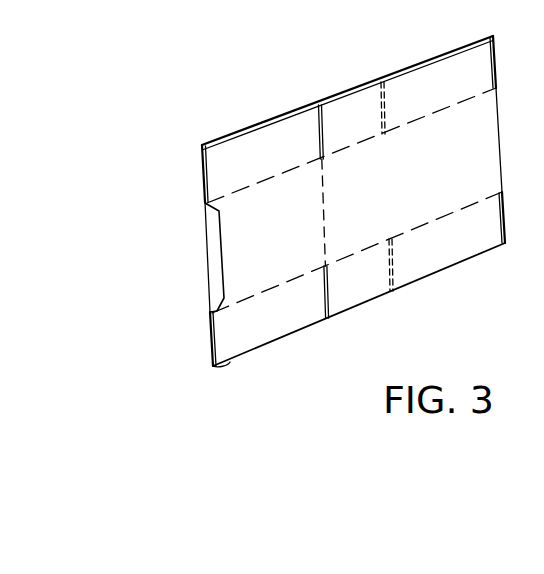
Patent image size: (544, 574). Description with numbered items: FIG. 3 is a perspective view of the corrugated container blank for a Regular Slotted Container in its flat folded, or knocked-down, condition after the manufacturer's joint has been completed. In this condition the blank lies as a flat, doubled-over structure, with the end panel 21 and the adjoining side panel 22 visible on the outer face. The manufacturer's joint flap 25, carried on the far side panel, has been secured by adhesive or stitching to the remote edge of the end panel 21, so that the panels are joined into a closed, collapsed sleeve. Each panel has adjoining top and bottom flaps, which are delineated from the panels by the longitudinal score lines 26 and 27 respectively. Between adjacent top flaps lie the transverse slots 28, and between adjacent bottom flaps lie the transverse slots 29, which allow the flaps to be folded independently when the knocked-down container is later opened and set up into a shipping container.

The end panel 21 is at (269, 238).
The side panel 22 is at (417, 188).
The manufacturer's joint flap 25 is at (208, 278).
The longitudinal score line 26 is at (318, 166).
The longitudinal score line 27 is at (390, 240).
The transverse slot 28 is at (204, 176).
The transverse slot 29 is at (328, 316).